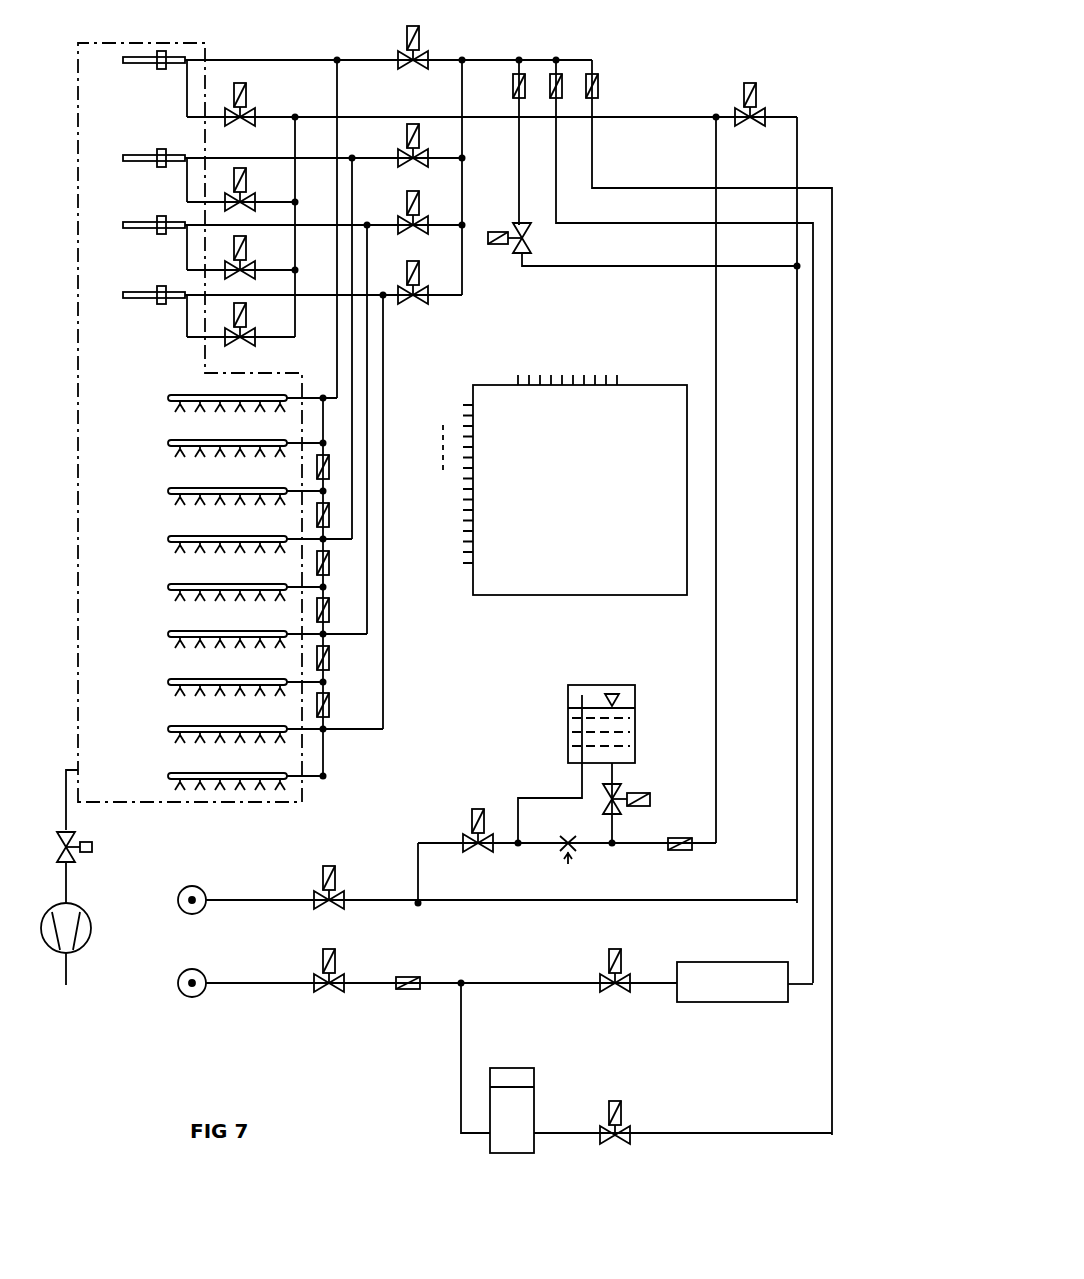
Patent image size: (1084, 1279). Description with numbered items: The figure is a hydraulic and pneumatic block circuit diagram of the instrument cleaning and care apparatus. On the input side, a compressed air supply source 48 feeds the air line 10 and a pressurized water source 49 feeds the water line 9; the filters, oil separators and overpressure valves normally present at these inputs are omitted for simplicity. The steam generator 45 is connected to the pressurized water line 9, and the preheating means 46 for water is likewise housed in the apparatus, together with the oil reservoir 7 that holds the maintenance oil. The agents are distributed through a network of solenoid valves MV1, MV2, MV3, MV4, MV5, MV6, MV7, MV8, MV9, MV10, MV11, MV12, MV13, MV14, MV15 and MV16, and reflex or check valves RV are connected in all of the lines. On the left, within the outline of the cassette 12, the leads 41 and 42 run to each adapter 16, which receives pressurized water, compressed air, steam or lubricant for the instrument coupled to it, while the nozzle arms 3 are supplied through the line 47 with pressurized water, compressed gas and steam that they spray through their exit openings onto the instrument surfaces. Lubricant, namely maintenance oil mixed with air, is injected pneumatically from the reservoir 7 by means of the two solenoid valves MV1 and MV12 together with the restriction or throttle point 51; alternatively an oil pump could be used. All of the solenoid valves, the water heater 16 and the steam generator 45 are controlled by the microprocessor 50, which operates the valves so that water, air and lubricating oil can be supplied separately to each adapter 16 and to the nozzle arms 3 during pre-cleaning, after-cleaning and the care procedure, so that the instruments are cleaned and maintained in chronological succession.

The nozzle arms 3 is at (166, 394).
The oil reservoir 7 is at (635, 712).
The water line 9 is at (275, 985).
The air line 10 is at (258, 900).
The cassette 12 is at (78, 598).
The adapter 16 is at (148, 57).
The lead 41 is at (218, 60).
The lead 42 is at (323, 117).
The steam generator 45 is at (534, 1100).
The preheating means 46 is at (727, 962).
The line 47 is at (337, 342).
The compressed air supply source 48 is at (178, 900).
The pressurized water source 49 is at (178, 983).
The microprocessor 50 is at (585, 598).
The restriction point 51 is at (572, 866).
The solenoid valve MV1 is at (246, 88).
The solenoid valve MV2 is at (234, 180).
The solenoid valve MV3 is at (234, 246).
The solenoid valve MV4 is at (234, 316).
The solenoid valve MV5 is at (407, 44).
The solenoid valve MV6 is at (407, 135).
The solenoid valve MV7 is at (407, 210).
The solenoid valve MV8 is at (407, 272).
The solenoid valve MV9 is at (498, 245).
The solenoid valve MV10 is at (744, 90).
The solenoid valve MV11 is at (672, 782).
The solenoid valve MV12 is at (472, 818).
The solenoid valve MV13 is at (329, 866).
The solenoid valve MV14 is at (323, 956).
The solenoid valve MV15 is at (609, 960).
The solenoid valve MV16 is at (621, 1108).
The check valves RV is at (585, 78).